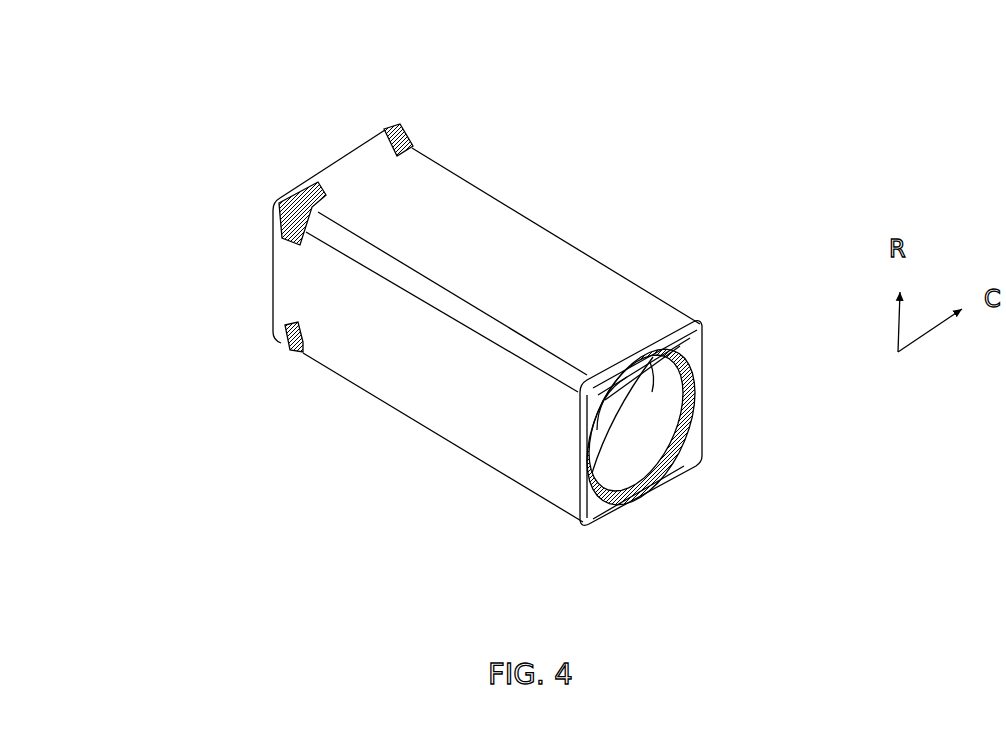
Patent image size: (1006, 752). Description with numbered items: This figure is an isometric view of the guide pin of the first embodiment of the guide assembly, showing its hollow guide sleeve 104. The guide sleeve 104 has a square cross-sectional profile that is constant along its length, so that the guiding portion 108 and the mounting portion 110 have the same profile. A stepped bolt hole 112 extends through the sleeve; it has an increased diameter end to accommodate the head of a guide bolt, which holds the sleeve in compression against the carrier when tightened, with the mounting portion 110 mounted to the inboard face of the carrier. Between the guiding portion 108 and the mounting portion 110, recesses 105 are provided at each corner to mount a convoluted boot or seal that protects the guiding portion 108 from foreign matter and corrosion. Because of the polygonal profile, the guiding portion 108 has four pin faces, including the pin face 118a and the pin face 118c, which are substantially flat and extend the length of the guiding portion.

The guide sleeve 104 is at (474, 110).
The recesses 105 is at (273, 220).
The guiding portion 108 is at (498, 222).
The mounting portion 110 is at (318, 168).
The stepped bolt hole 112 is at (655, 447).
The pin face 118a is at (655, 313).
The pin face 118c is at (455, 395).